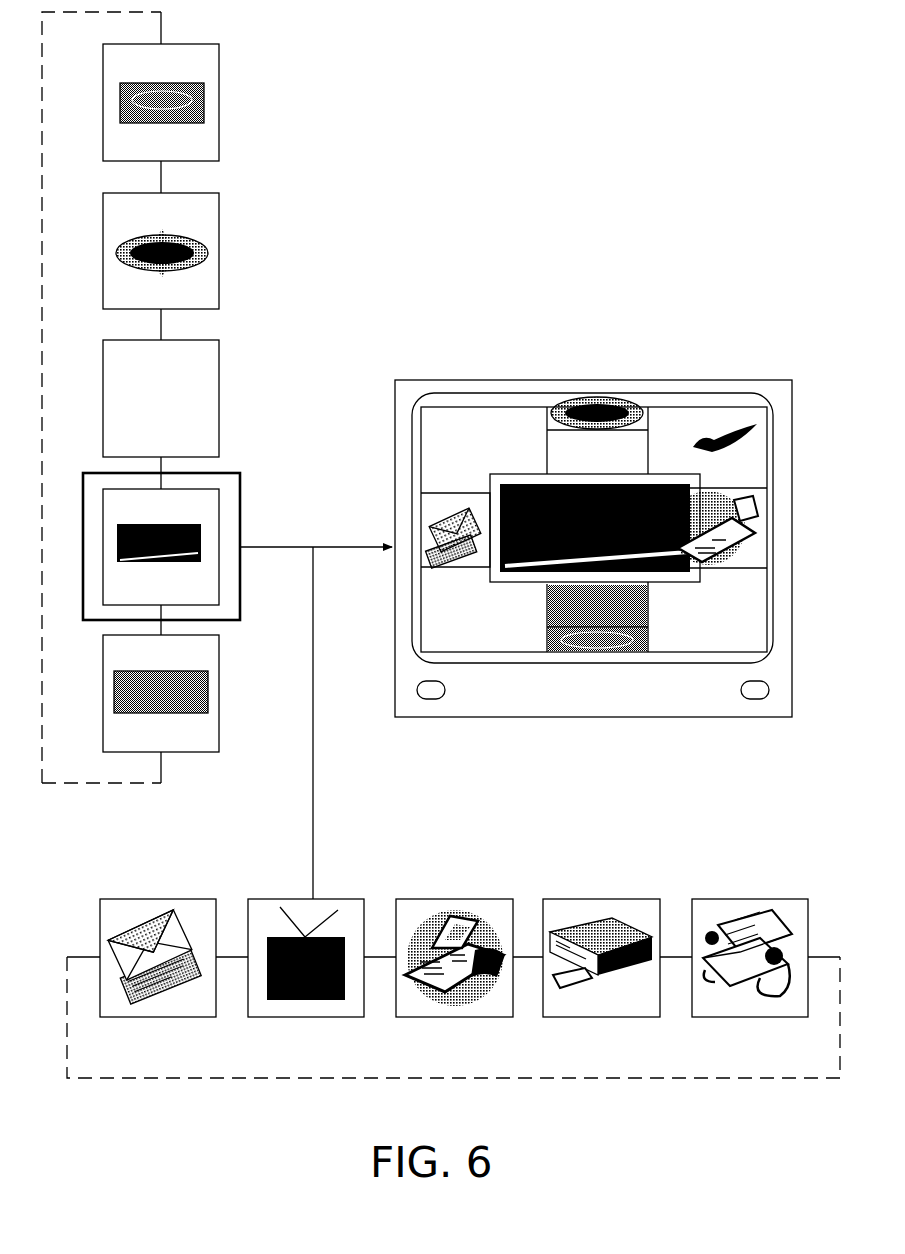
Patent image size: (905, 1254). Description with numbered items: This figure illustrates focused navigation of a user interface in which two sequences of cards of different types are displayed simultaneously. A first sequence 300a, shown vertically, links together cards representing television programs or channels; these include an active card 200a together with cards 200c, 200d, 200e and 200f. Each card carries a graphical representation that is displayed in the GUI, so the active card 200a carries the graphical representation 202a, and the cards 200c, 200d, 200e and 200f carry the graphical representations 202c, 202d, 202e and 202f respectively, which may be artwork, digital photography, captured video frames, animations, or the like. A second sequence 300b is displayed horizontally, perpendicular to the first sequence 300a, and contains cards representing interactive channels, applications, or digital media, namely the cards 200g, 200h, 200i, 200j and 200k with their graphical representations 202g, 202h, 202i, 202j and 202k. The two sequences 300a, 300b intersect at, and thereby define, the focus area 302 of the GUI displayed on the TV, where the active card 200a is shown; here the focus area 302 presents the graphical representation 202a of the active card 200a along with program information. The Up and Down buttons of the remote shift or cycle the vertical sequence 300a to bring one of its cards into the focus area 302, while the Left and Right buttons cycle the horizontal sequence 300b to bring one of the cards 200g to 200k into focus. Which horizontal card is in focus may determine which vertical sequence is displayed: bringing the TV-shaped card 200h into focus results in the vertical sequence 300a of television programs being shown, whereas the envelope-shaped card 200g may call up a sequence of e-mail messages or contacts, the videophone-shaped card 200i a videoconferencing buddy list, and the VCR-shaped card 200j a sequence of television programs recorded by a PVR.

The first sequence 300a is at (250, 60).
The second sequence 300b is at (763, 800).
The focus area 302 is at (664, 470).
The active card 200a is at (219, 497).
The card 200c is at (219, 392).
The card 200d is at (219, 103).
The card 200e is at (219, 243).
The card 200f is at (219, 686).
The card 200g is at (188, 899).
The card 200h is at (339, 899).
The card 200i is at (490, 899).
The card 200j is at (630, 899).
The card 200k is at (778, 899).
The graphical representation 202a is at (117, 537).
The graphical representation 202c is at (120, 394).
The graphical representation 202d is at (120, 108).
The graphical representation 202e is at (120, 256).
The graphical representation 202f is at (120, 694).
The graphical representation 202g is at (145, 1003).
The graphical representation 202h is at (298, 1000).
The graphical representation 202i is at (452, 1000).
The graphical representation 202j is at (590, 985).
The graphical representation 202k is at (743, 993).